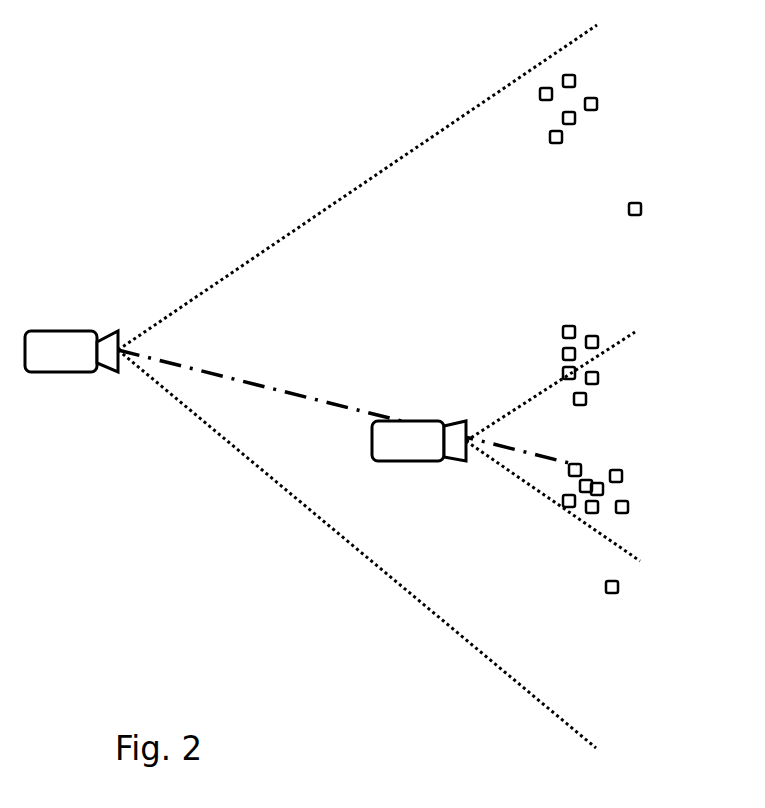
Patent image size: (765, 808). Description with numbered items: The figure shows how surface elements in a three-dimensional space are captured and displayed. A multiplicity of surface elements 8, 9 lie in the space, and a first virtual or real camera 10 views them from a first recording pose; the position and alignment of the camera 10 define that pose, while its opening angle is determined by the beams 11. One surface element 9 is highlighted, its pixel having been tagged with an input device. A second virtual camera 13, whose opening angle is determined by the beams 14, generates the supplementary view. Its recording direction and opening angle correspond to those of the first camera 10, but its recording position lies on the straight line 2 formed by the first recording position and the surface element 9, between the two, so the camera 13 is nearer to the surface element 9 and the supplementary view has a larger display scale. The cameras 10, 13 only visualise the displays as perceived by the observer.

The optical axis / line of sight 2 is at (332, 403).
The surface elements 8 is at (600, 105).
The surface element 9 is at (577, 465).
The first virtual or real camera 10 is at (60, 370).
The beams 11 is at (318, 215).
The second virtual camera 13 is at (408, 460).
The beams 14 is at (510, 408).